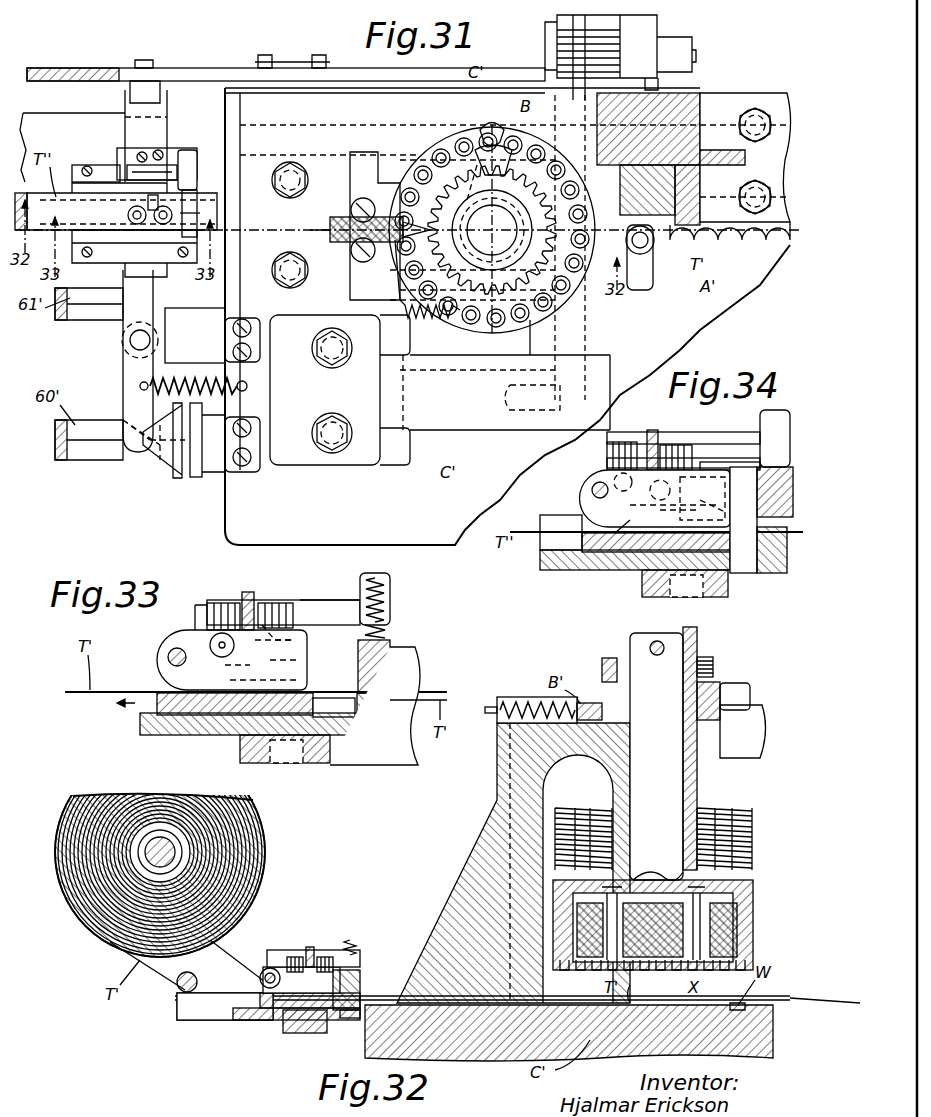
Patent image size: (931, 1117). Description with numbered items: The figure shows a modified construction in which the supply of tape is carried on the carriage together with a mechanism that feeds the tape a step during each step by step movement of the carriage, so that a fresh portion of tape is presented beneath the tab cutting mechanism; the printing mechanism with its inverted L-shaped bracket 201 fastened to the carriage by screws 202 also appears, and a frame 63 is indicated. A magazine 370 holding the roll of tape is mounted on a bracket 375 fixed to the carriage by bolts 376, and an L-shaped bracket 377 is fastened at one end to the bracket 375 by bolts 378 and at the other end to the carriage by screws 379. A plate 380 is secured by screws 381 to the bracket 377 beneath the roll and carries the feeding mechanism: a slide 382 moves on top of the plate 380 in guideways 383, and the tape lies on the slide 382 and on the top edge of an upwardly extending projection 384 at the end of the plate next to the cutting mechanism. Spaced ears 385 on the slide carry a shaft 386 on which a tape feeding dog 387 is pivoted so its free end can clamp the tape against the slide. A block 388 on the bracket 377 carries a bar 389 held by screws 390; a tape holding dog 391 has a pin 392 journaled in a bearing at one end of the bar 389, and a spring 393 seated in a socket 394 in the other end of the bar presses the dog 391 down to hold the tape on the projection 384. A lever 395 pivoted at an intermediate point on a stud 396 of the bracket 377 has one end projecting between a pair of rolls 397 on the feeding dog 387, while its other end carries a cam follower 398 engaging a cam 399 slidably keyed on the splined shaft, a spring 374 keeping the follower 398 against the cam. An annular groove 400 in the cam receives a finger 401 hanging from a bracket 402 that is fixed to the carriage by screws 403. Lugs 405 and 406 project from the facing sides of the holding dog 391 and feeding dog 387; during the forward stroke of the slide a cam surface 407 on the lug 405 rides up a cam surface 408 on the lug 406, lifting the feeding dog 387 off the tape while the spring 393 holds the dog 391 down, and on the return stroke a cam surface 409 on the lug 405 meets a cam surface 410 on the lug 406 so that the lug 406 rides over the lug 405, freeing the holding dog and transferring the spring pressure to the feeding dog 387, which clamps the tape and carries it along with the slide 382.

In FIG. 31, the frame 63 is at (44, 123).
In FIG. 31, the inverted L-shaped bracket 201 is at (352, 170).
In FIG. 31, the screws 202 is at (290, 163).
In FIG. 32, the magazine 370 is at (170, 851).
In FIG. 31, the spring 374 is at (193, 378).
In FIG. 31, the bracket 375 is at (190, 68).
In FIG. 33, the bracket 375 is at (402, 765).
In FIG. 32, the bracket 375 is at (257, 912).
In FIG. 31, the bolts 376 is at (318, 58).
In FIG. 31, the L-shaped bracket 377 is at (135, 108).
In FIG. 34, the L-shaped bracket 377 is at (645, 585).
In FIG. 33, the L-shaped bracket 377 is at (242, 750).
In FIG. 32, the L-shaped bracket 377 is at (300, 1035).
In FIG. 31, the bolts 378 is at (140, 62).
In FIG. 31, the screws 379 is at (247, 344).
In FIG. 34, the plate 380 is at (542, 555).
In FIG. 33, the plate 380 is at (165, 732).
In FIG. 32, the plate 380 is at (200, 1020).
In FIG. 34, the screws 381 is at (685, 597).
In FIG. 33, the screws 381 is at (283, 765).
In FIG. 31, the slide 382 is at (108, 170).
In FIG. 34, the slide 382 is at (595, 540).
In FIG. 33, the slide 382 is at (158, 705).
In FIG. 32, the slide 382 is at (245, 1020).
In FIG. 31, the guideways 383 is at (78, 165).
In FIG. 34, the guideways 383 is at (575, 508).
In FIG. 34, the projection 384 is at (772, 545).
In FIG. 33, the projection 384 is at (398, 700).
In FIG. 31, the ears 385 is at (116, 205).
In FIG. 34, the ears 385 is at (590, 510).
In FIG. 33, the ears 385 is at (157, 672).
In FIG. 34, the shaft 386 is at (598, 483).
In FIG. 33, the shaft 386 is at (170, 652).
In FIG. 31, the tape feeding dog 387 is at (128, 214).
In FIG. 34, the tape feeding dog 387 is at (620, 535).
In FIG. 33, the tape feeding dog 387 is at (197, 605).
In FIG. 32, the tape feeding dog 387 is at (278, 1033).
In FIG. 34, the block 388 is at (700, 460).
In FIG. 33, the block 388 is at (300, 628).
In FIG. 31, the bar 389 is at (172, 148).
In FIG. 34, the bar 389 is at (695, 432).
In FIG. 33, the bar 389 is at (320, 603).
In FIG. 32, the bar 389 is at (330, 955).
In FIG. 31, the screws 390 is at (140, 153).
In FIG. 31, the tape holding dog 391 is at (156, 151).
In FIG. 34, the tape holding dog 391 is at (745, 560).
In FIG. 33, the tape holding dog 391 is at (390, 652).
In FIG. 32, the tape holding dog 391 is at (350, 975).
In FIG. 34, the pin 392 is at (618, 476).
In FIG. 33, the pin 392 is at (226, 633).
In FIG. 34, the spring 393 is at (775, 462).
In FIG. 33, the spring 393 is at (388, 630).
In FIG. 32, the spring 393 is at (355, 948).
In FIG. 31, the socket 394 is at (205, 140).
In FIG. 33, the socket 394 is at (390, 600).
In FIG. 32, the socket 394 is at (343, 1027).
In FIG. 31, the lever 395 is at (128, 340).
In FIG. 34, the lever 395 is at (652, 430).
In FIG. 33, the lever 395 is at (261, 602).
In FIG. 32, the lever 395 is at (310, 947).
In FIG. 31, the stud 396 is at (130, 348).
In FIG. 31, the rolls 397 is at (200, 200).
In FIG. 34, the rolls 397 is at (622, 442).
In FIG. 33, the rolls 397 is at (222, 597).
In FIG. 32, the rolls 397 is at (322, 955).
In FIG. 31, the cam follower 398 is at (125, 425).
In FIG. 31, the cam 399 is at (158, 458).
In FIG. 31, the annular groove 400 is at (194, 478).
In FIG. 31, the finger 401 is at (210, 430).
In FIG. 31, the bracket 402 is at (237, 472).
In FIG. 31, the screws 403 is at (250, 460).
In FIG. 31, the lug 405 is at (197, 192).
In FIG. 34, the lug 405 is at (705, 496).
In FIG. 33, the lug 405 is at (287, 612).
In FIG. 31, the lug 406 is at (130, 166).
In FIG. 34, the lug 406 is at (658, 493).
In FIG. 33, the lug 406 is at (334, 707).
In FIG. 34, the cam surface 407 is at (681, 516).
In FIG. 33, the cam surface 407 is at (225, 664).
In FIG. 34, the cam surface 408 is at (745, 462).
In FIG. 33, the cam surface 408 is at (308, 662).
In FIG. 34, the cam surface 409 is at (715, 514).
In FIG. 33, the cam surface 409 is at (298, 642).
In FIG. 34, the cam surface 410 is at (675, 515).
In FIG. 33, the cam surface 410 is at (265, 680).